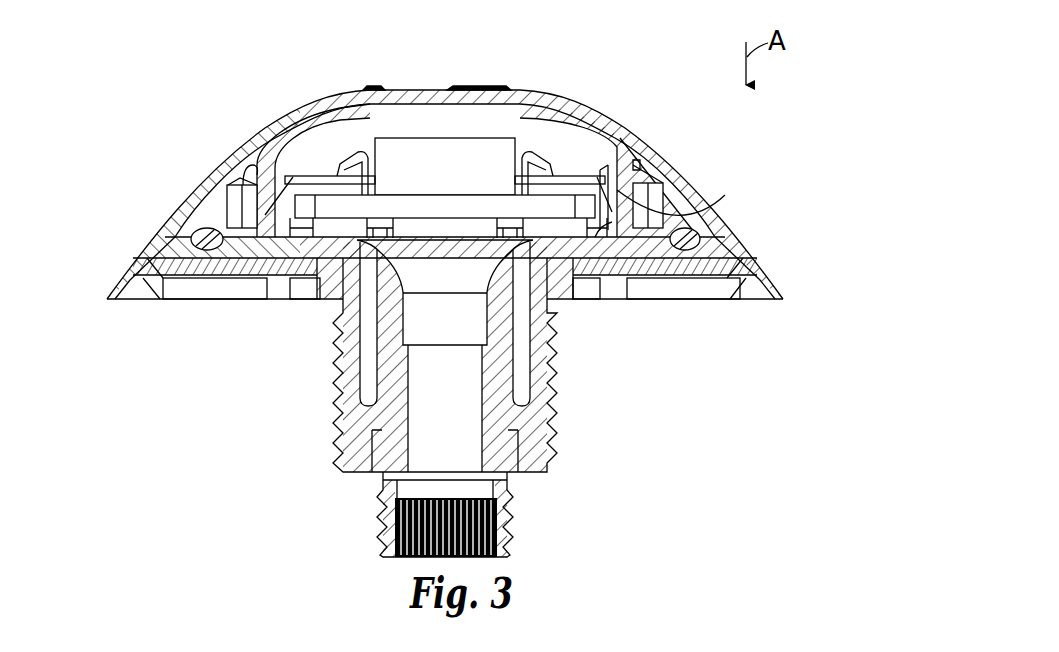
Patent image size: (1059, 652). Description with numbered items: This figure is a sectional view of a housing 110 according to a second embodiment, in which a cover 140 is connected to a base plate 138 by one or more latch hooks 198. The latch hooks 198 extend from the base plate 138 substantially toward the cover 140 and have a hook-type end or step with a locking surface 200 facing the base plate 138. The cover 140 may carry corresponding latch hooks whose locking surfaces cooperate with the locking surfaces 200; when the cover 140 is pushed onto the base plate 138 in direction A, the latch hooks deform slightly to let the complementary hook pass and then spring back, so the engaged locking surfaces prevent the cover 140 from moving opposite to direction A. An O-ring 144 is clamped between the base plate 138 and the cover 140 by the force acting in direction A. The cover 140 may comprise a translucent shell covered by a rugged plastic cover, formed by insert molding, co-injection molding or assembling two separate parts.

The housing 110 is at (457, 282).
The base plate 138 is at (710, 245).
The cover 140 is at (647, 138).
The O-ring 144 is at (192, 234).
The latch hooks 198 is at (617, 193).
The locking surface 200 is at (598, 238).